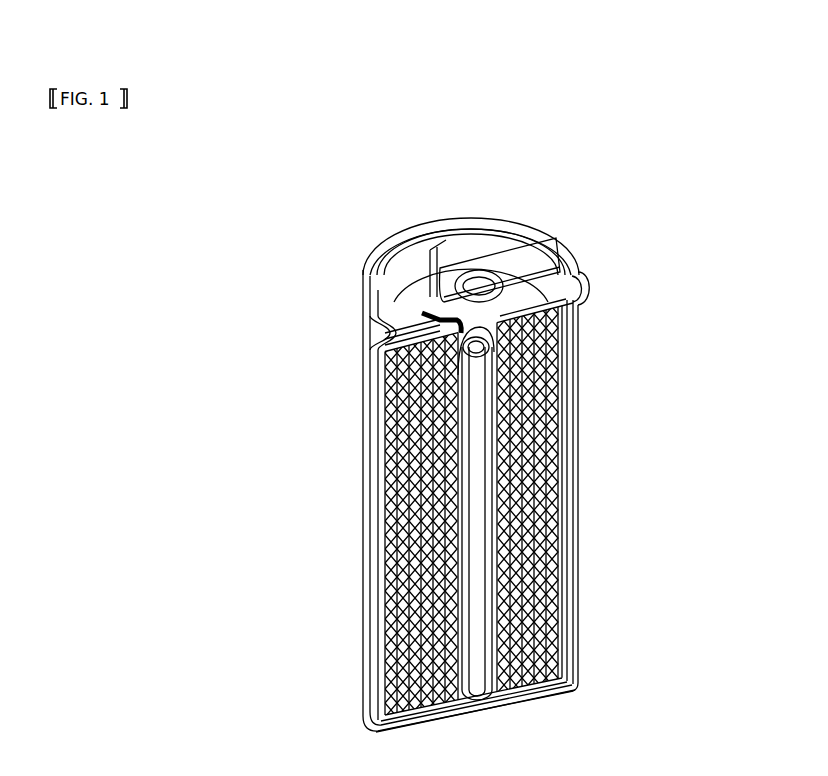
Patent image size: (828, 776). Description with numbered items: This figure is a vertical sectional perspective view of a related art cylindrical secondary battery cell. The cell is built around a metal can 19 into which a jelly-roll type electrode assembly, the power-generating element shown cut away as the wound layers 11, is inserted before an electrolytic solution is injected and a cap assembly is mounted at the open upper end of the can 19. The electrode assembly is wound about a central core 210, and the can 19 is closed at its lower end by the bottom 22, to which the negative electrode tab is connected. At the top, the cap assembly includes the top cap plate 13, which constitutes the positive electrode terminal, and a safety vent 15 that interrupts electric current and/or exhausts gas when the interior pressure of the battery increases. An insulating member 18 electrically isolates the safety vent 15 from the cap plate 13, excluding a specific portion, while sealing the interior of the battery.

The electrode assembly 11 is at (543, 608).
The top cap plate 13 is at (473, 236).
The safety vent 15 is at (541, 292).
The insulating member 18 is at (548, 262).
The metal can 19 is at (575, 457).
The can bottom 22 is at (570, 694).
The center pin 210 is at (464, 512).